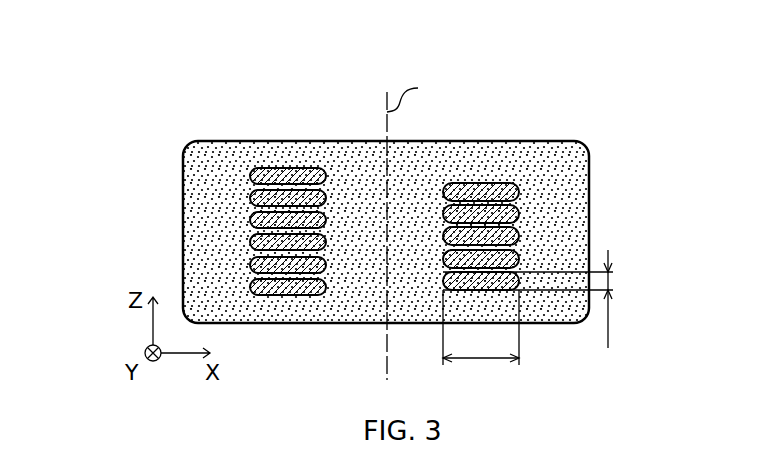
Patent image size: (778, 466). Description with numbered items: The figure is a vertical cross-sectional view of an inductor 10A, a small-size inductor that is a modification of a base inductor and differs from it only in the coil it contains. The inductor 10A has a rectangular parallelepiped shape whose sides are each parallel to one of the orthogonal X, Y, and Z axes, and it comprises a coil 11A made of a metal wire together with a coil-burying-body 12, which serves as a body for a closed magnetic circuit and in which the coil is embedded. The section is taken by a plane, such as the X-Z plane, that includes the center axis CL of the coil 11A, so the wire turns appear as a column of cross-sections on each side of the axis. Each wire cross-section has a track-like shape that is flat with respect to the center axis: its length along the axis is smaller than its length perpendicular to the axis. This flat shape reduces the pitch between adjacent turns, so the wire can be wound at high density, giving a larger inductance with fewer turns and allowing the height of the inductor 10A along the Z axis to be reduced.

The inductor 10A is at (457, 203).
The coil-burying-body 12 is at (547, 187).
The coil 11A is at (520, 238).